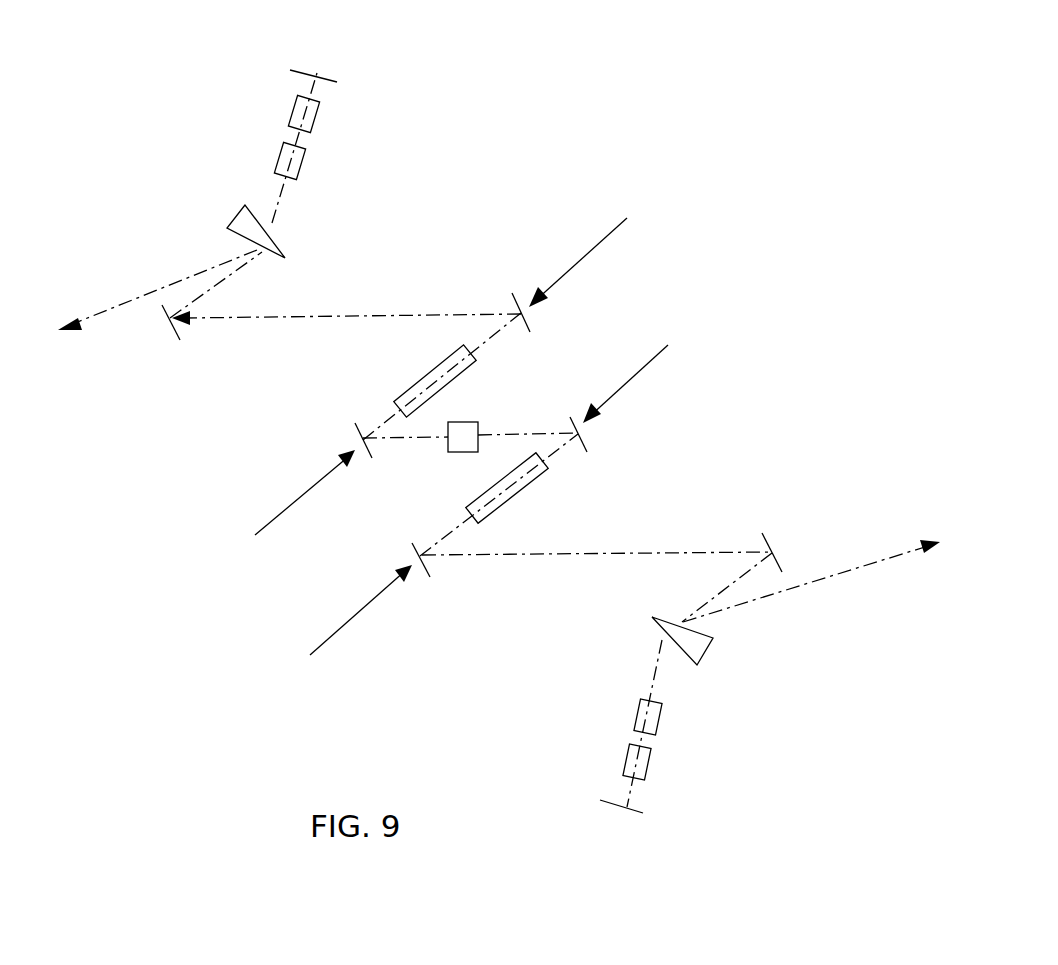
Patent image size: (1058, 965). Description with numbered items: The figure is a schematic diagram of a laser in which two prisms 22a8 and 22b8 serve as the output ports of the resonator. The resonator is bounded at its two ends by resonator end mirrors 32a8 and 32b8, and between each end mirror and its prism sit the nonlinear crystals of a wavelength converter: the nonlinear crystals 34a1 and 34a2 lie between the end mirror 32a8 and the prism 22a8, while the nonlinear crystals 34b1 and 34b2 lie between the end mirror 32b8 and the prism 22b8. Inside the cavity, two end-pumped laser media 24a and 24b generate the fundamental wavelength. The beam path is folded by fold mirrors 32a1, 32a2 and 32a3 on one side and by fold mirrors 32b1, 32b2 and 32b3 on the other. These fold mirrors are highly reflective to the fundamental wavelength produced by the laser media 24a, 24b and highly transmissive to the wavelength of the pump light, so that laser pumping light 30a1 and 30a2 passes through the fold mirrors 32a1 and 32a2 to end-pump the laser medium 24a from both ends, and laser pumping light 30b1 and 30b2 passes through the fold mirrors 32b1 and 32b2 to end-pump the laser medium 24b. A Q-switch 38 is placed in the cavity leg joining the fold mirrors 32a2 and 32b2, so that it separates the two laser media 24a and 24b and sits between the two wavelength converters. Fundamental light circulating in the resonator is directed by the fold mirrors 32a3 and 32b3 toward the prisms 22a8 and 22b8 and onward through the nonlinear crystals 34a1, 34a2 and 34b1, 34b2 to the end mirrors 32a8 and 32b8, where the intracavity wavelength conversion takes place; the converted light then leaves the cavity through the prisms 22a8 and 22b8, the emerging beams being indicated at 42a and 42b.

The prism 22a8 is at (238, 218).
The prism 22b8 is at (707, 632).
The laser medium 24a is at (420, 382).
The laser medium 24b is at (523, 490).
The laser pumping light 30a1 is at (590, 250).
The laser pumping light 30a2 is at (277, 512).
The laser pumping light 30b1 is at (355, 615).
The laser pumping light 30b2 is at (632, 382).
The fold mirror 32a1 is at (523, 297).
The fold mirror 32a2 is at (360, 425).
The fold mirror 32a3 is at (166, 319).
The resonator end mirror 32a8 is at (327, 75).
The fold mirror 32b1 is at (428, 568).
The fold mirror 32b2 is at (585, 438).
The fold mirror 32b3 is at (773, 535).
The resonator end mirror 32b8 is at (630, 812).
The nonlinear crystal 34a1 is at (313, 122).
The nonlinear crystal 34a2 is at (300, 168).
The nonlinear crystal 34b1 is at (648, 768).
The nonlinear crystal 34b2 is at (658, 718).
The Q-switch 38 is at (480, 420).
The output beam 42a is at (122, 302).
The output beam 42b is at (858, 565).